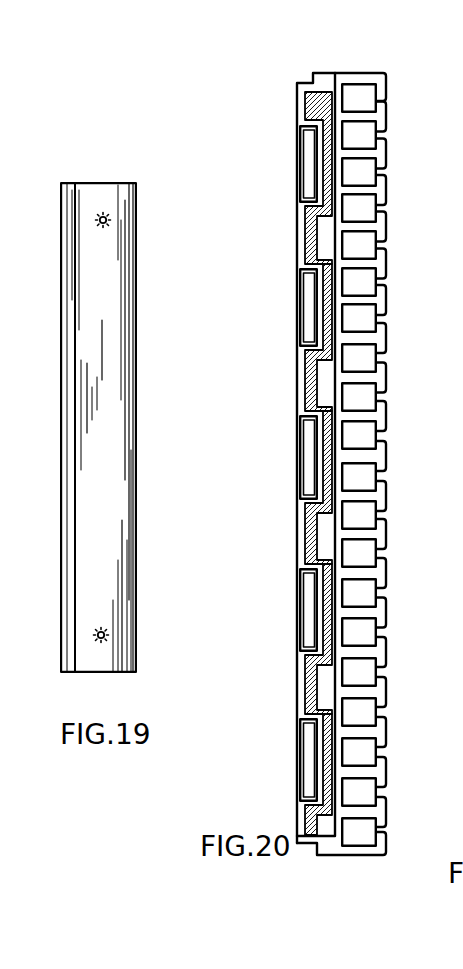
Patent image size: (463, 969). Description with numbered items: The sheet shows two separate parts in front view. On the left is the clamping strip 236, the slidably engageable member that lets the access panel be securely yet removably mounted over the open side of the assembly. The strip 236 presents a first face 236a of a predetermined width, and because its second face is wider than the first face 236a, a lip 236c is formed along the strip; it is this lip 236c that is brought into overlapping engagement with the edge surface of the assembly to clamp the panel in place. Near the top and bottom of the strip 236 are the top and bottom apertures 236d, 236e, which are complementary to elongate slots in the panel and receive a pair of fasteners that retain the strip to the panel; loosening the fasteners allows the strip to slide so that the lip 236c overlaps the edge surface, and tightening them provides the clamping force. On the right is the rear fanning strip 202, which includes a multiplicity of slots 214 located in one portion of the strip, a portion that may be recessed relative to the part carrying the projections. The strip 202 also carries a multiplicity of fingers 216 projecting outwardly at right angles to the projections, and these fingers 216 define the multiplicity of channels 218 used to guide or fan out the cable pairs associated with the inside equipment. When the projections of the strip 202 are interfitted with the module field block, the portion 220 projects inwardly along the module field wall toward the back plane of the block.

In FIG. 19, the clamping strip 236 is at (116, 401).
In FIG. 19, the first face 236a is at (124, 540).
In FIG. 19, the lip 236c is at (67, 613).
In FIG. 19, the top aperture 236d is at (108, 226).
In FIG. 19, the bottom aperture 236e is at (106, 635).
In FIG. 20, the rear fanning strip 202 is at (341, 464).
In FIG. 20, the slots 214 is at (302, 172).
In FIG. 20, the fingers 216 is at (387, 263).
In FIG. 20, the channels 218 is at (361, 441).
In FIG. 20, the portion 220 is at (303, 464).